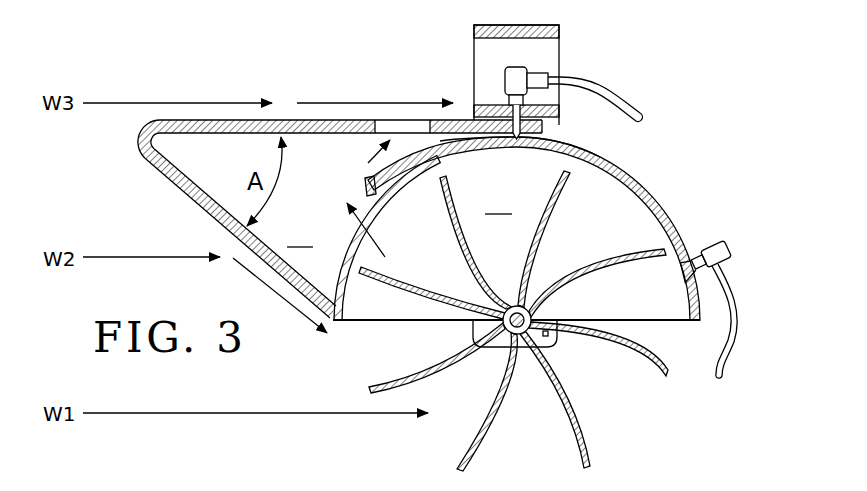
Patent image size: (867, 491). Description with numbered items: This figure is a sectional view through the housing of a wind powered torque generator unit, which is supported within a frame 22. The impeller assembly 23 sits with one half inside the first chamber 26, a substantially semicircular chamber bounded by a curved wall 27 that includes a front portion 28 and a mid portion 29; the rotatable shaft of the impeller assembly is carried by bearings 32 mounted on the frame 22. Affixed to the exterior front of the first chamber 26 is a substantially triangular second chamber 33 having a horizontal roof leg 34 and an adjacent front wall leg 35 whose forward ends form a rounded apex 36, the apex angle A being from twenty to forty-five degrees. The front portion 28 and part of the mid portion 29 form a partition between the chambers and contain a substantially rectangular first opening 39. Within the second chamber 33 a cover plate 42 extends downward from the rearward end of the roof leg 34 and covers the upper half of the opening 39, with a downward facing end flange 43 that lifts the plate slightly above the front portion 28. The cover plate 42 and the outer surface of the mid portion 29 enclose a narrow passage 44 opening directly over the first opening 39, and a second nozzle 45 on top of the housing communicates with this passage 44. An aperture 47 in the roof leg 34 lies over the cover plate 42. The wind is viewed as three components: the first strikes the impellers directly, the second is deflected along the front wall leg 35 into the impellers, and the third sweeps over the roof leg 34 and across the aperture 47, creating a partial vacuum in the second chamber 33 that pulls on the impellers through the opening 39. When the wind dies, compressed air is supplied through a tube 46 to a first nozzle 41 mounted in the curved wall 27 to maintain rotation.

The frame 22 is at (560, 34).
The impeller assembly 23 is at (628, 403).
The first chamber 26 is at (500, 202).
The curved wall 27 is at (650, 194).
The front portion 28 is at (345, 299).
The mid portion 29 is at (565, 150).
The bearings 32 is at (553, 336).
The second chamber 33 is at (302, 235).
The roof leg 34 is at (240, 120).
The front wall leg 35 is at (195, 205).
The apex 36 is at (137, 143).
The first opening 39 is at (375, 217).
The first nozzle 41 is at (727, 246).
The cover plate 42 is at (366, 176).
The end flange 43 is at (362, 193).
The narrow passage 44 is at (393, 180).
The second nozzle 45 is at (516, 67).
The tube 46 is at (728, 338).
The aperture 47 is at (403, 120).